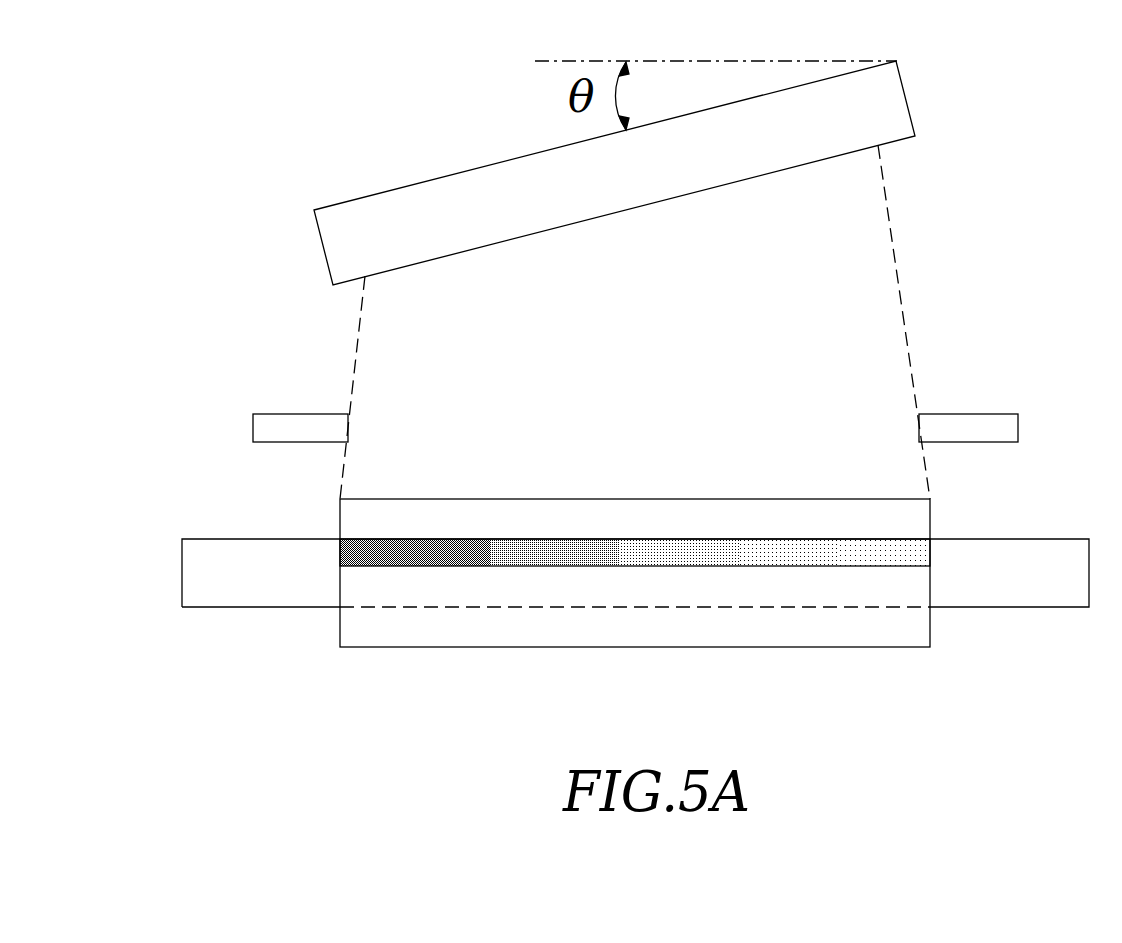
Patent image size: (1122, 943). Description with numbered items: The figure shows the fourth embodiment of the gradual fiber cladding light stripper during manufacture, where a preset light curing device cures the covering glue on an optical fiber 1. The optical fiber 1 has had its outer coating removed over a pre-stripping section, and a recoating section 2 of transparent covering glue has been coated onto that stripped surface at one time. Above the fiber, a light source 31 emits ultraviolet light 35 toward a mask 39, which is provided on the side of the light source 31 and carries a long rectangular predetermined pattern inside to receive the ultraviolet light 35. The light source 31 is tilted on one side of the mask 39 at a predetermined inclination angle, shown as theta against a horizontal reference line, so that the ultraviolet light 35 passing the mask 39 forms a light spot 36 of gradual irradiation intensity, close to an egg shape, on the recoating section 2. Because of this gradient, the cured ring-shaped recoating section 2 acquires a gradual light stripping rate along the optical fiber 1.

The optical fiber 1 is at (1039, 558).
The recoating section 2 is at (465, 648).
The light source 31 is at (378, 213).
The ultraviolet light 35 is at (905, 310).
The light spot 36 is at (818, 543).
The mask 39 is at (992, 420).